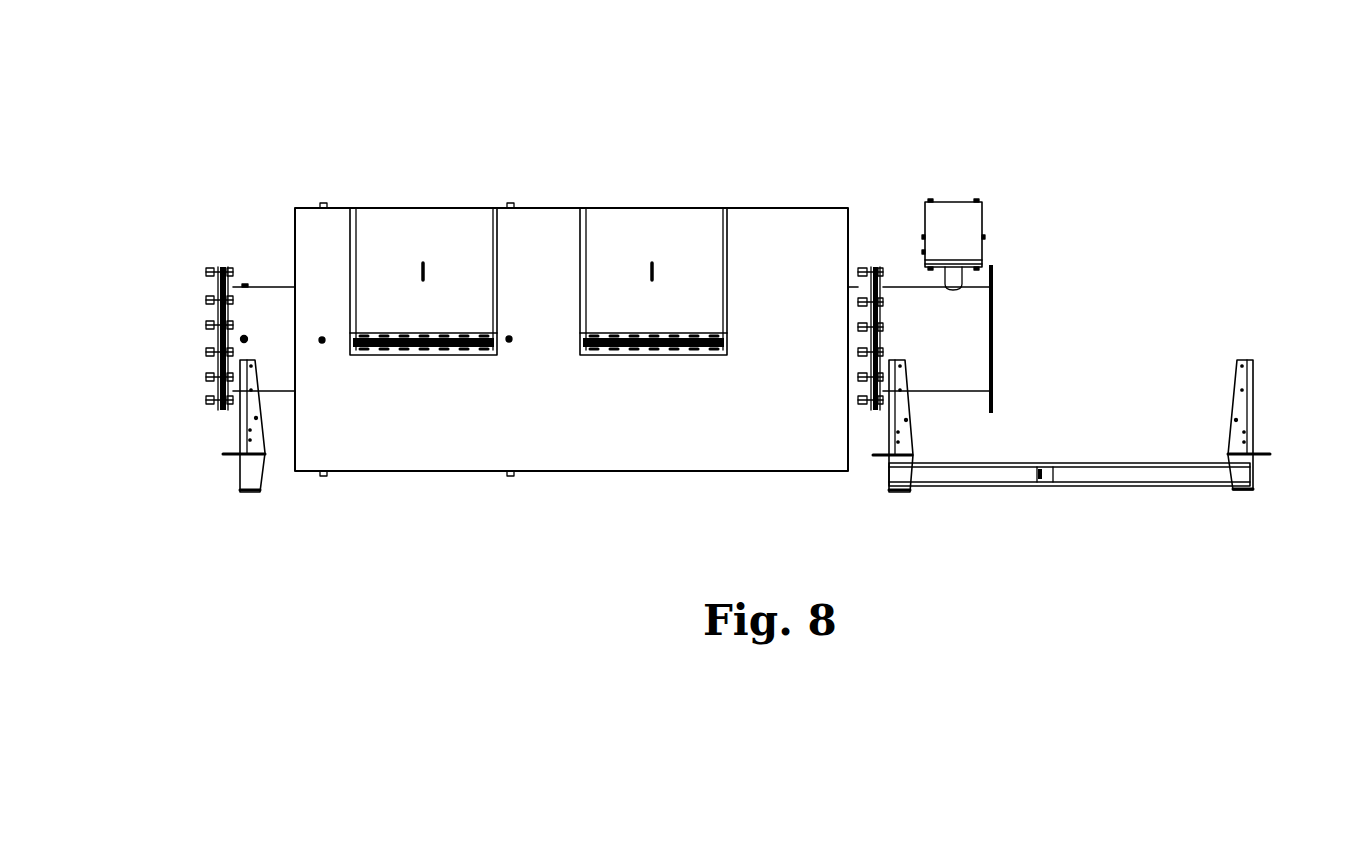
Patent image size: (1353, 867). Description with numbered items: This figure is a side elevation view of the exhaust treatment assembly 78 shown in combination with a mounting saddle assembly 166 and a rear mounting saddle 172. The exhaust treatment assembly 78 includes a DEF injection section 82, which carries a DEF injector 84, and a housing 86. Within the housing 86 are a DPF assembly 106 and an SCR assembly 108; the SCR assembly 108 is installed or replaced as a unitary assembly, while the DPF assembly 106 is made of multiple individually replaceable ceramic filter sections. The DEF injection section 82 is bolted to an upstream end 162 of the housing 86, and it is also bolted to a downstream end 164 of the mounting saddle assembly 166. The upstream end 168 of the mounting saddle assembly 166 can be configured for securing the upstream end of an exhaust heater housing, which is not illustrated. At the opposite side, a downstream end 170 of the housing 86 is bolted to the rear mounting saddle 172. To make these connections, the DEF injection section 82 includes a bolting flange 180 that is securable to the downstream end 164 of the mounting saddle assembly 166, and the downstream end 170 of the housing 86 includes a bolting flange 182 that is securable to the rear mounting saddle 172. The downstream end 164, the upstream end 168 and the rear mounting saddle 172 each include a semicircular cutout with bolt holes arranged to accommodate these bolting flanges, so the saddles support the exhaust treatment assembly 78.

The exhaust treatment assembly 78 is at (697, 104).
The DEF injection section 82 is at (978, 342).
The DEF injector 84 is at (958, 215).
The housing 86 is at (412, 448).
The DPF assembly 106 is at (622, 215).
The SCR assembly 108 is at (415, 215).
The upstream end of the housing 162 is at (783, 208).
The downstream end of the mounting saddle assembly 164 is at (902, 430).
The mounting saddle assembly 166 is at (1140, 473).
The upstream end of the mounting saddle assembly 168 is at (1250, 408).
The downstream end of the housing 170 is at (268, 295).
The rear mounting saddle 172 is at (237, 420).
The bolting flange 180 is at (874, 268).
The bolting flange 182 is at (210, 285).